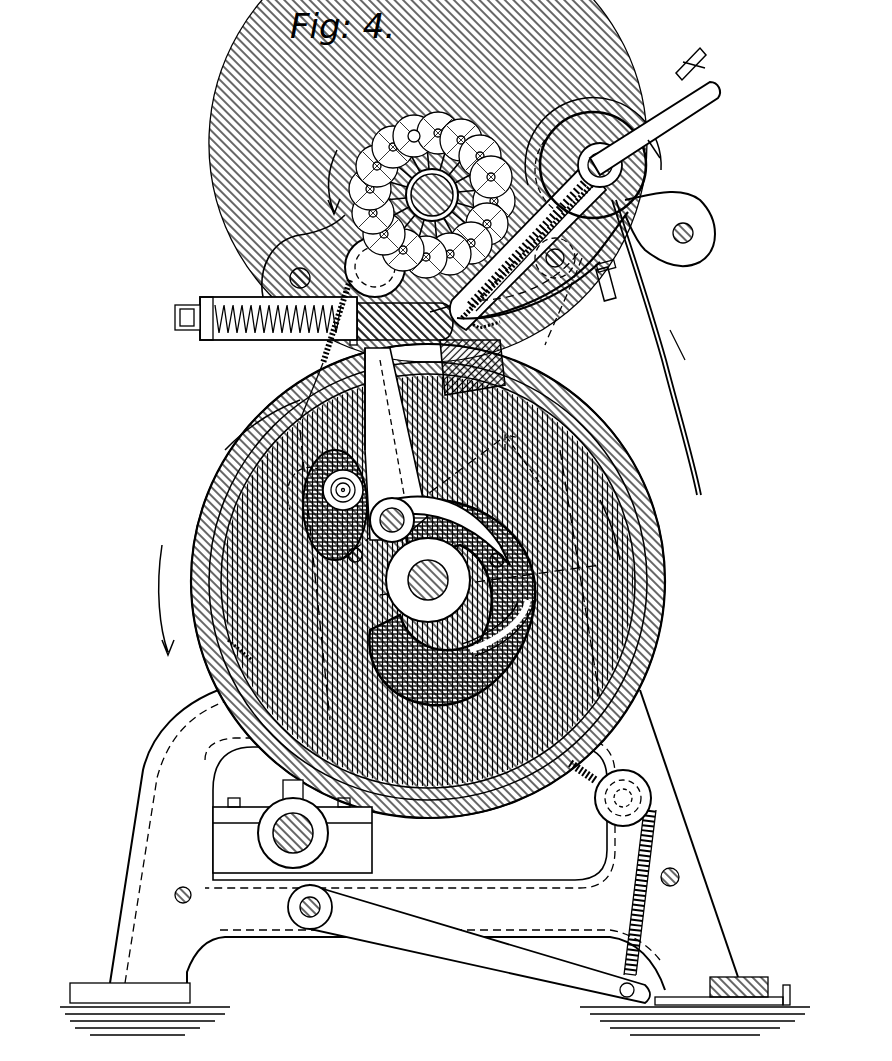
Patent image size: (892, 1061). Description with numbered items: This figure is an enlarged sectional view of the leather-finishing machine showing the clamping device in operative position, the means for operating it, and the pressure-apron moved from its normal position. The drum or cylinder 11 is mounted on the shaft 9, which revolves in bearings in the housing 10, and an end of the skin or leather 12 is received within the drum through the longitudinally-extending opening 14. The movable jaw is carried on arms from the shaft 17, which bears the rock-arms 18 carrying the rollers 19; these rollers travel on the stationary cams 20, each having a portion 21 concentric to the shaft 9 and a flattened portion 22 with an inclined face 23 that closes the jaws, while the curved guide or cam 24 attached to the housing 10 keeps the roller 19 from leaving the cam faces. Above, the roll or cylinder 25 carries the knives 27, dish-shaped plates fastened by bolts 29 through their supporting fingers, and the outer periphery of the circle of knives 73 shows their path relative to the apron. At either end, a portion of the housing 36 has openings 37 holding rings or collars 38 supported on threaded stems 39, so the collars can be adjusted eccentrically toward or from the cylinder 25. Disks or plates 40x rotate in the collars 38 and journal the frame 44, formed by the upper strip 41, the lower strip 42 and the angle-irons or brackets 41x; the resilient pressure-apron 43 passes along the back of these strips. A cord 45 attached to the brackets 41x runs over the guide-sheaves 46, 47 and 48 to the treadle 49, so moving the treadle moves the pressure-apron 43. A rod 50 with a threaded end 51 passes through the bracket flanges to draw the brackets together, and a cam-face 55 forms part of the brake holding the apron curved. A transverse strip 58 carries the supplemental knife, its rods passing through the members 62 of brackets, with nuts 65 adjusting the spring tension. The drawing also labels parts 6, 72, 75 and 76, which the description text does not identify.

The shaft bearing 6 is at (315, 843).
The shaft 9 is at (408, 582).
The housing 10 is at (660, 830).
The drum or cylinder 11 is at (665, 600).
The skin or leather 12 is at (480, 415).
The longitudinally-extending opening 14 is at (270, 418).
The shaft 17 is at (380, 520).
The rock-arms 18 is at (320, 492).
The rollers 19 is at (325, 478).
The stationary cams 20 is at (452, 601).
The portion 21 is at (375, 705).
The portion 22 is at (450, 530).
The inclined face 23 is at (393, 498).
The curved guide or cam 24 is at (560, 555).
The roll or cylinder 25 is at (421, 176).
The knives 27 is at (440, 112).
The bolt or other fastening device 29 is at (414, 128).
The portion of the housing 36 is at (592, 98).
The openings 37 is at (615, 120).
The rings or collars 38 is at (575, 140).
The threaded stems 39 is at (685, 88).
The disks or plates 40x is at (565, 140).
The upper strip 41 is at (598, 155).
The angle-irons or brackets 41x is at (560, 262).
The lower strip 42 is at (520, 300).
The pressure-apron 43 is at (557, 288).
The frame 44 is at (560, 205).
The cord 45 is at (345, 285).
The guide-sheave 46 is at (350, 255).
The guide-sheave 47 is at (225, 660).
The guide-sheave 48 is at (630, 780).
The treadle 49 is at (570, 985).
The rod 50 is at (580, 250).
The threaded end 51 is at (690, 128).
The cam-face 55 is at (460, 318).
The strip 58 is at (440, 310).
The members 62 is at (220, 297).
The nuts 65 is at (185, 305).
The rod 72 is at (660, 345).
The outer periphery of the circle of knives 73 is at (462, 345).
The bar 75 is at (395, 395).
The lever plate 76 is at (396, 444).